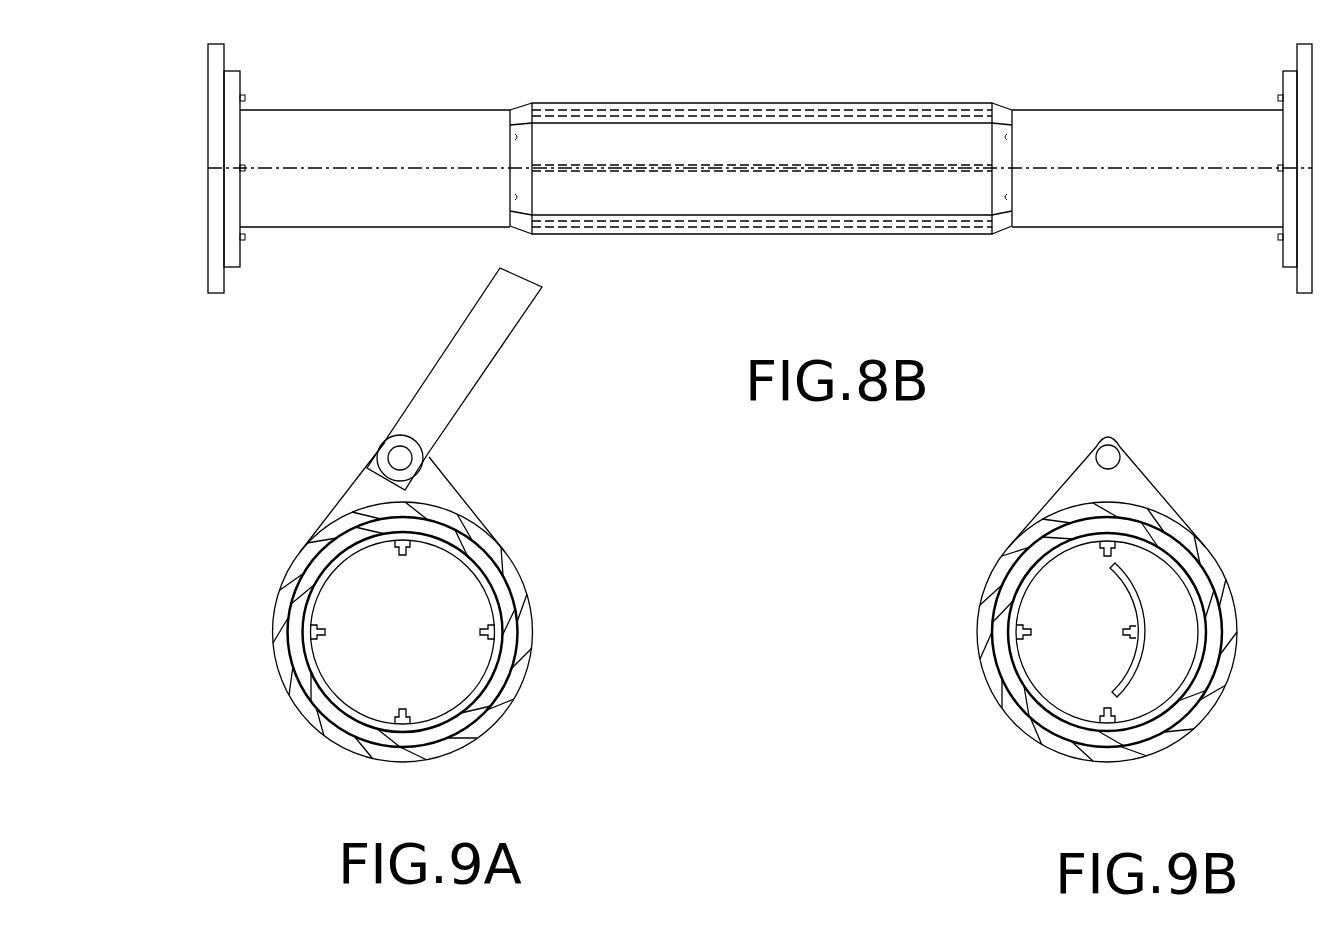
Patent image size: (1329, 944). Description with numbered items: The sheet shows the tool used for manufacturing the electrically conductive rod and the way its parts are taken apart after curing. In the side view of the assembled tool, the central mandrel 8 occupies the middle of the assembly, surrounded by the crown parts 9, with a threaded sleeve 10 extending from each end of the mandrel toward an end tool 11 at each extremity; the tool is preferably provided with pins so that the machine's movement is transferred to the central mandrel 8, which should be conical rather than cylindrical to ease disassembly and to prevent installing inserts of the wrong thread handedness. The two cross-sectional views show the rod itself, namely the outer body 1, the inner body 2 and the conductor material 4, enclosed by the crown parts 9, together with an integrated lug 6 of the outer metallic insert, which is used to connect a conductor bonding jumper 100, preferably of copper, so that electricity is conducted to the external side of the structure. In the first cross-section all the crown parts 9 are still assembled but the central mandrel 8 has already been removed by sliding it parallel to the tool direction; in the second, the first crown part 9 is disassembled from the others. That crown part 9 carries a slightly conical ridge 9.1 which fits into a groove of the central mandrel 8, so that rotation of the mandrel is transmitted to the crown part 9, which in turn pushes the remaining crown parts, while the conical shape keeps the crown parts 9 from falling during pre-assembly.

In FIG. 9A, the outer body 1 is at (512, 582).
In FIG. 9B, the outer body 1 is at (1218, 587).
In FIG. 9A, the inner body 2 is at (457, 723).
In FIG. 9B, the inner body 2 is at (1223, 707).
In FIG. 9A, the conductor material 4 is at (515, 677).
In FIG. 9B, the conductor material 4 is at (1233, 658).
In FIG. 9A, the integrated lug 6 is at (430, 495).
In FIG. 9B, the integrated lug 6 is at (1155, 502).
In FIG. 8B, the central mandrel 8 is at (935, 113).
In FIG. 8B, the crown part 9 is at (753, 227).
In FIG. 9A, the crown part 9 is at (335, 700).
In FIG. 9B, the crown part 9 is at (1142, 612).
In FIG. 9A, the ridge 9.1 is at (477, 633).
In FIG. 9B, the ridge 9.1 is at (1130, 632).
In FIG. 8B, the threaded sleeve 10 is at (365, 202).
In FIG. 8B, the end tool 11 is at (217, 70).
In FIG. 9A, the conductor bonding jumper 100 is at (473, 365).